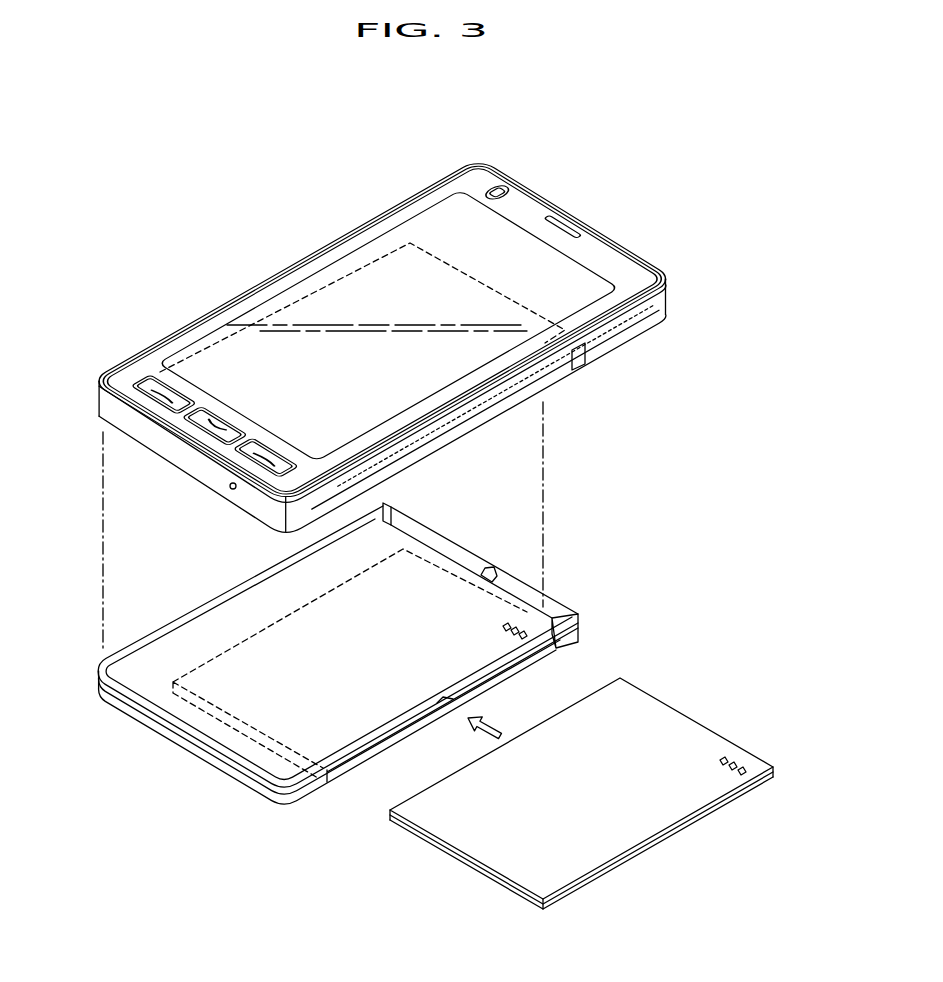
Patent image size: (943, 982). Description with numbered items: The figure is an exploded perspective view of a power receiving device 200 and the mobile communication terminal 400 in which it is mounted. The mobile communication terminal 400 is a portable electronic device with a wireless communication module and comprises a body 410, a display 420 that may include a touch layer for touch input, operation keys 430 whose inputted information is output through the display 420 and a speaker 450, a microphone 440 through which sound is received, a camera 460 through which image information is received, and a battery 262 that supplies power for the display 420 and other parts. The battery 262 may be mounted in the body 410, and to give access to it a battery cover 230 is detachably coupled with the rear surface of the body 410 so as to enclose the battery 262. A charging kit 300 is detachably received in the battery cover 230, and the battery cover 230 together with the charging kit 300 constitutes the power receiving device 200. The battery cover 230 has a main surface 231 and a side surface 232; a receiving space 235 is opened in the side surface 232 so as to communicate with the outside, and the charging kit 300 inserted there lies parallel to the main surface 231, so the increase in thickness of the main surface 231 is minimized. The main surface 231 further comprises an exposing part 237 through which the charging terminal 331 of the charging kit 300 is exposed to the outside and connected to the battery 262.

The mobile communication terminal 400 is at (402, 338).
The body 410 is at (664, 296).
The display 420 is at (323, 266).
The operation keys 430 is at (144, 381).
The microphone 440 is at (226, 490).
The speaker 450 is at (573, 224).
The camera 460 is at (505, 187).
The battery 262 is at (215, 343).
The power receiving device 200 is at (357, 682).
The battery cover 230 is at (153, 738).
The main surface 231 is at (150, 672).
The side surface 232 is at (571, 638).
The receiving space 235 is at (338, 773).
The exposing part 237 is at (537, 604).
The charging kit 300 is at (601, 800).
The charging terminal 331 is at (735, 757).